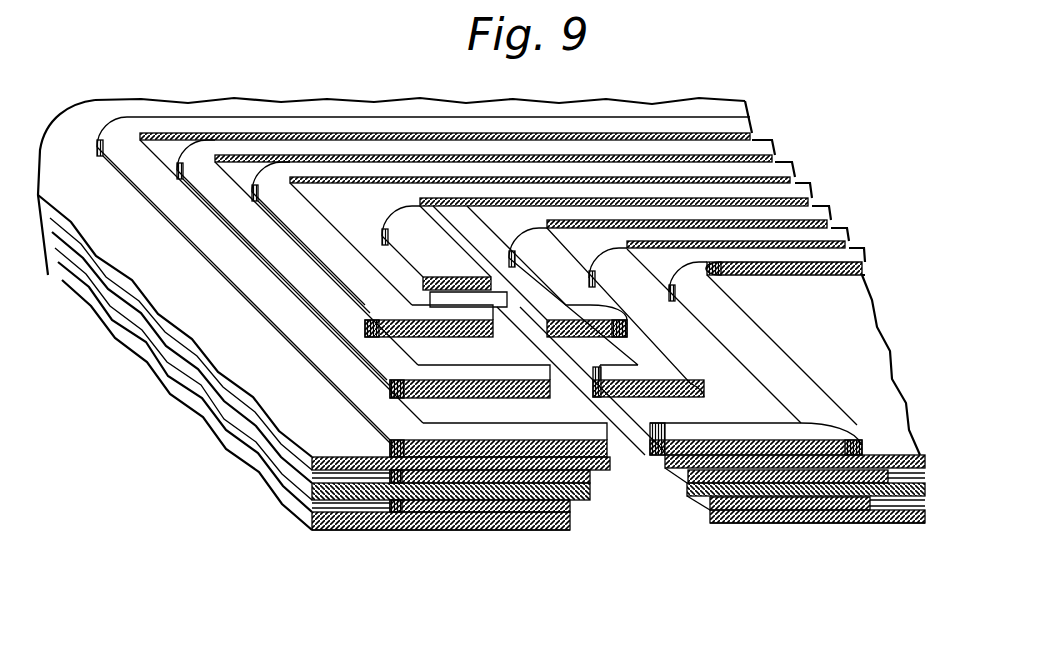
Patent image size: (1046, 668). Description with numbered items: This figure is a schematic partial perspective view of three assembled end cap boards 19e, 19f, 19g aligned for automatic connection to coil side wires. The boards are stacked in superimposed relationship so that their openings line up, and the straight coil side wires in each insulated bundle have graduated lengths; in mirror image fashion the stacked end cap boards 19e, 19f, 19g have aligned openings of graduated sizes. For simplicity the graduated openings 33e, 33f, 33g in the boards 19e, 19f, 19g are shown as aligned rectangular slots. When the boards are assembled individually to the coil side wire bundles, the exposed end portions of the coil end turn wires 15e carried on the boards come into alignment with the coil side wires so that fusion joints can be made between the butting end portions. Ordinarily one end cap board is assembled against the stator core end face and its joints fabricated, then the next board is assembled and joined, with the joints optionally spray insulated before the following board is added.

The coil end turn wires 15e is at (457, 438).
The end cap board 19e is at (873, 353).
The end cap board 19f is at (877, 525).
The end cap board 19g is at (903, 525).
The graduated opening 33e is at (598, 486).
The graduated opening 33f is at (590, 500).
The graduated opening 33g is at (568, 525).